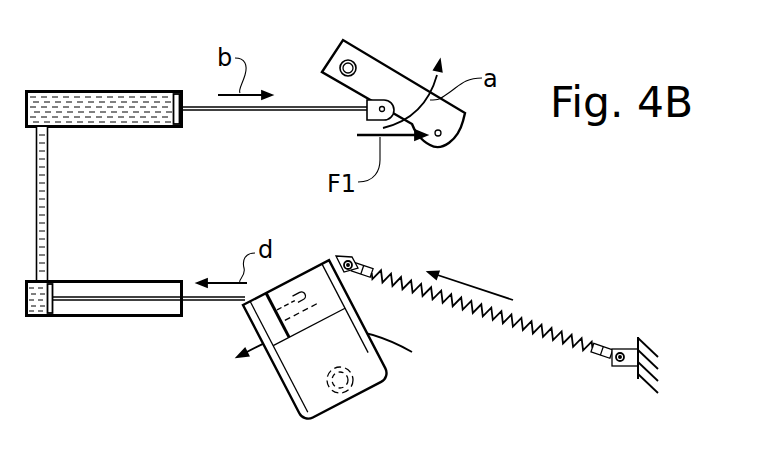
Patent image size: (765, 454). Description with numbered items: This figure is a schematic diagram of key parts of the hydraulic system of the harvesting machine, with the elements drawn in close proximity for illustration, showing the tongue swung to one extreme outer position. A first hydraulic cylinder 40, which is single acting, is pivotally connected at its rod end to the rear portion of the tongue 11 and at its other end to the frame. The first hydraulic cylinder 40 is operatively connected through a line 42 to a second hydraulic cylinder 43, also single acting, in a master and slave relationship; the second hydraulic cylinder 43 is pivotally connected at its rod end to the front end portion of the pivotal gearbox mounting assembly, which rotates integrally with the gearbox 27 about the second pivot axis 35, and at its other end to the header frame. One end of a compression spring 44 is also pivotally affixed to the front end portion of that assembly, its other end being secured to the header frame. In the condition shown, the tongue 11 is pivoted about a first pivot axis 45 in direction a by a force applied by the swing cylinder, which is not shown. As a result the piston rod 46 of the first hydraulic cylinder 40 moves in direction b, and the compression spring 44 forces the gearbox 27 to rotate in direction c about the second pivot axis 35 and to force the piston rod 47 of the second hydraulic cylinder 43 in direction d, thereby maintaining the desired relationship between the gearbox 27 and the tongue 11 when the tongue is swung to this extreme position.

The tongue 11 is at (378, 72).
The gearbox 27 is at (388, 373).
The second pivot axis 35 is at (330, 387).
The first hydraulic cylinder 40 is at (110, 90).
The line 42 is at (48, 205).
The second hydraulic cylinder 43 is at (143, 280).
The compression spring 44 is at (563, 328).
The first pivot axis 45 is at (337, 62).
The piston rod 46 is at (290, 112).
The piston rod 47 is at (202, 302).